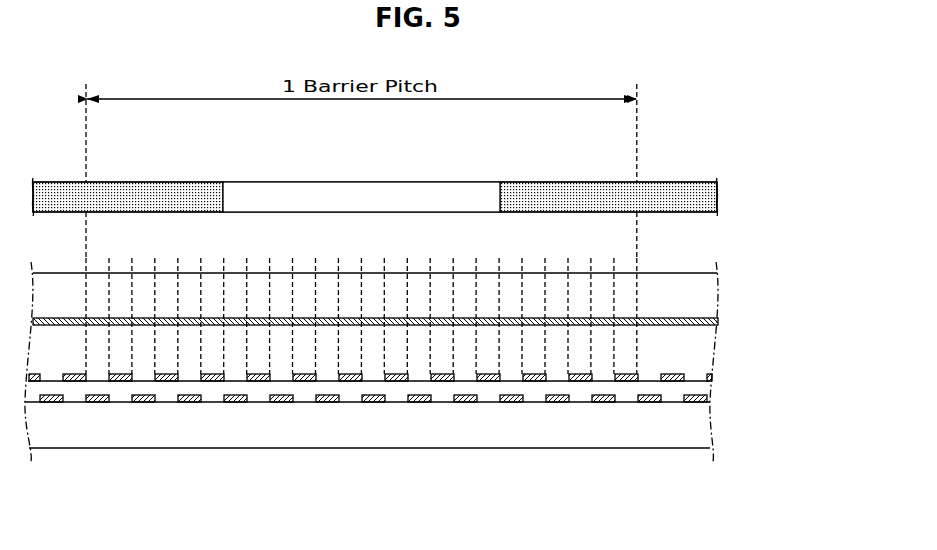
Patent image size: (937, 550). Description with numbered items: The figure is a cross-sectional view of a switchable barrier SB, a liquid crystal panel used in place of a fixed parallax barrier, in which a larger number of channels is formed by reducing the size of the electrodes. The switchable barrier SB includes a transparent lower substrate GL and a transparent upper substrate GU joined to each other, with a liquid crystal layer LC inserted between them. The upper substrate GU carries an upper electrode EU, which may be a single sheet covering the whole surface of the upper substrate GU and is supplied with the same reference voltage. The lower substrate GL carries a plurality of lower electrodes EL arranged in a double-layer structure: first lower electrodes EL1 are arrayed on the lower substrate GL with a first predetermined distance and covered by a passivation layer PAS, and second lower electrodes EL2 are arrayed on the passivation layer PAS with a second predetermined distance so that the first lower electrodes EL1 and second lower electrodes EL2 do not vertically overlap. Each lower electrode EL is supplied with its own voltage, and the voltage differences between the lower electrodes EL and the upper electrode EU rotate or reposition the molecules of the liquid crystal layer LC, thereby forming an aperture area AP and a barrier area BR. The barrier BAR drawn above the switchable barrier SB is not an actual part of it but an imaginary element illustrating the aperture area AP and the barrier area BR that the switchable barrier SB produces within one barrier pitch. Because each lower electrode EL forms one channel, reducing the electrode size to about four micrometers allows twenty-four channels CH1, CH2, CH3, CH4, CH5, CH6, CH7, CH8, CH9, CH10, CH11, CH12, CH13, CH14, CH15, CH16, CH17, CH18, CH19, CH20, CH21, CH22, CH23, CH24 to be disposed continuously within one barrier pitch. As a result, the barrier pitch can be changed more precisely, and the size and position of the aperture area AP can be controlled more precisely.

The barrier BAR is at (422, 172).
The aperture area AP is at (342, 187).
The barrier area BR is at (562, 187).
The upper substrate GU is at (712, 292).
The upper electrode EU is at (720, 321).
The liquid crystal layer LC is at (705, 355).
The switchable barrier SB is at (720, 413).
The lower electrodes EL is at (370, 454).
The first lower electrodes EL1 is at (190, 403).
The second lower electrodes EL2 is at (259, 382).
The lower substrate GL is at (345, 437).
The passivation layer PAS is at (440, 396).
The channel CH1 is at (98, 306).
The channel CH2 is at (121, 295).
The channel CH3 is at (143, 306).
The channel CH4 is at (166, 295).
The channel CH5 is at (189, 306).
The channel CH6 is at (212, 295).
The channel CH7 is at (235, 306).
The channel CH8 is at (258, 295).
The channel CH9 is at (281, 306).
The channel CH10 is at (304, 295).
The channel CH11 is at (327, 306).
The channel CH12 is at (349, 295).
The channel CH13 is at (372, 306).
The channel CH14 is at (395, 295).
The channel CH15 is at (418, 306).
The channel CH16 is at (441, 295).
The channel CH17 is at (464, 306).
The channel CH18 is at (487, 295).
The channel CH19 is at (510, 306).
The channel CH20 is at (533, 295).
The channel CH21 is at (556, 306).
The channel CH22 is at (579, 295).
The channel CH23 is at (602, 306).
The channel CH24 is at (625, 295).